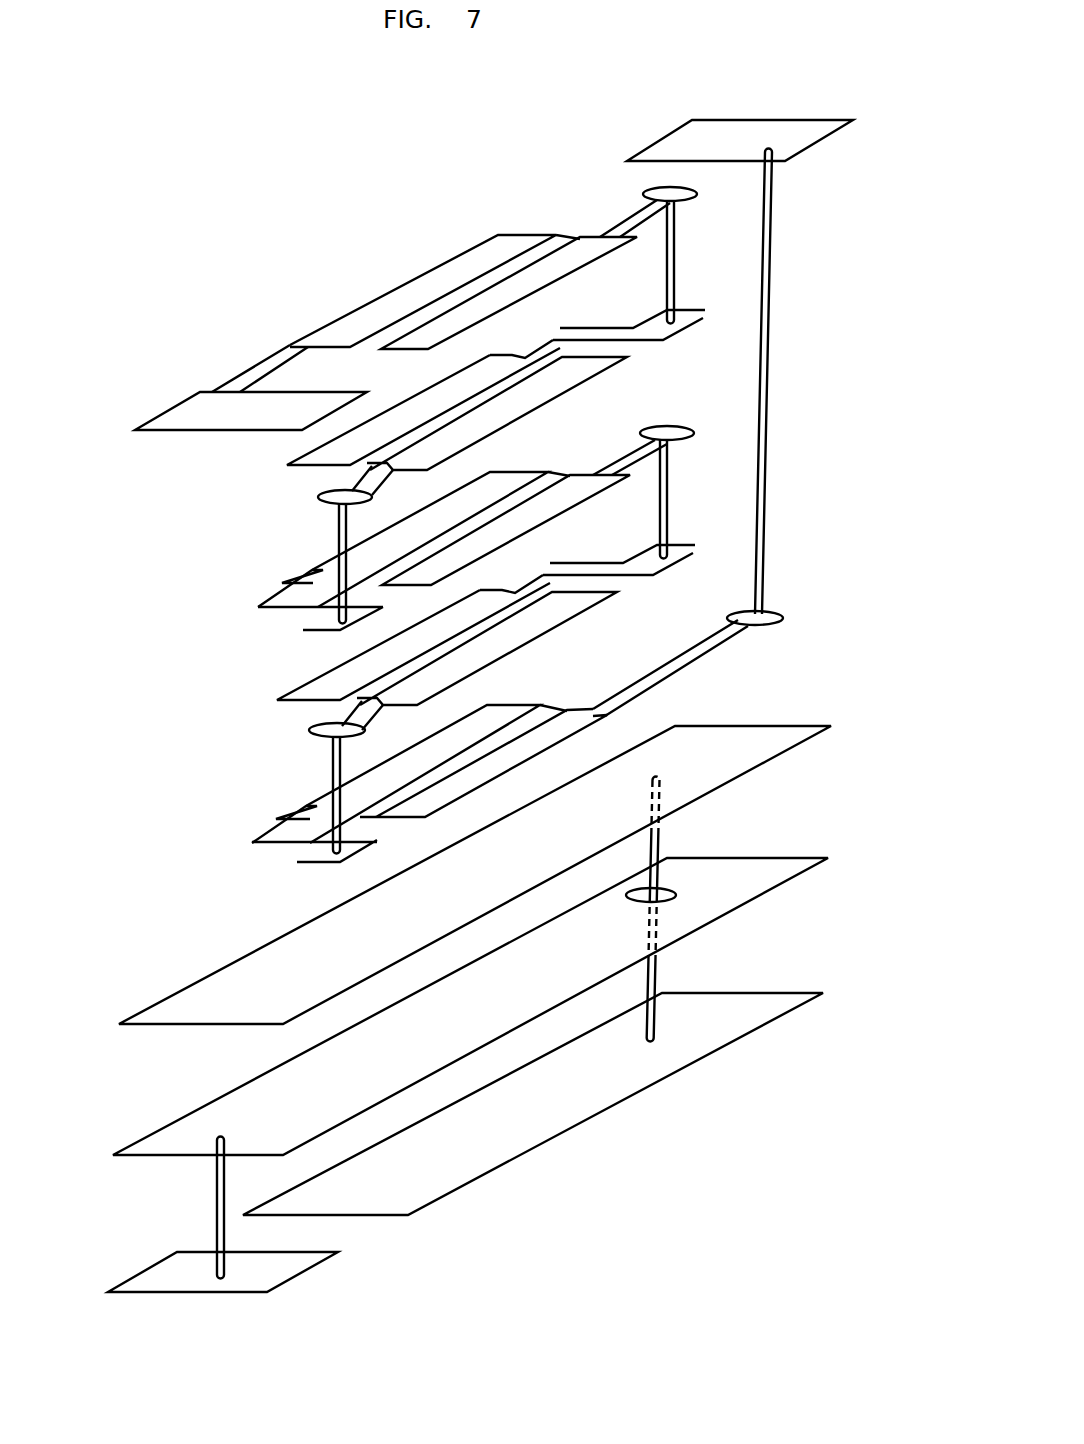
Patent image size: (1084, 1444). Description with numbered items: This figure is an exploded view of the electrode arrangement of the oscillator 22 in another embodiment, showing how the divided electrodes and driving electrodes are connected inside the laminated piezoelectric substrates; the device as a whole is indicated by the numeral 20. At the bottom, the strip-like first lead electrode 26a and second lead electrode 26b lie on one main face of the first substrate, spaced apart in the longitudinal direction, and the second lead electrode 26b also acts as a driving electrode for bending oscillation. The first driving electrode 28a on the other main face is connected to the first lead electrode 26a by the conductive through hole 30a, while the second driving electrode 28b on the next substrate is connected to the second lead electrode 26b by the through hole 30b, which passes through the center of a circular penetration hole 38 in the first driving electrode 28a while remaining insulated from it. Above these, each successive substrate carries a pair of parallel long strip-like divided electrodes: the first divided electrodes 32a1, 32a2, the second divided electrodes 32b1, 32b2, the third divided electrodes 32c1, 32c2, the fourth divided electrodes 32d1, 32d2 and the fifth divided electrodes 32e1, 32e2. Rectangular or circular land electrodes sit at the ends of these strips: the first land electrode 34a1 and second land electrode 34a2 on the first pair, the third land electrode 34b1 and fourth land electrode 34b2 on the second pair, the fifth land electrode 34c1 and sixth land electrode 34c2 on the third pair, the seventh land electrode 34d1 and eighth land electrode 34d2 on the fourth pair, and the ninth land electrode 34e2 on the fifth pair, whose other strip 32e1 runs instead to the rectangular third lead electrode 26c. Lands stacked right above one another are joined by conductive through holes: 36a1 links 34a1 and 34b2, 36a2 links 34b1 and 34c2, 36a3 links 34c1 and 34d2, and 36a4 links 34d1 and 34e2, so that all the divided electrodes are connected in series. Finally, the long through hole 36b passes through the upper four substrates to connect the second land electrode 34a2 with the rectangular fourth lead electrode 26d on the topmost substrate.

The multilayer coil device 20 is at (252, 81).
The oscillator 22 is at (541, 177).
The first lead electrode 26a is at (295, 1268).
The second lead electrode 26b is at (638, 1085).
The third lead electrode 26c is at (185, 398).
The fourth lead electrode 26d is at (675, 155).
The first driving electrode 28a is at (775, 866).
The second driving electrode 28b is at (780, 725).
The conductive through hole 30a is at (217, 1205).
The conductive through hole 30b is at (665, 836).
The first divided electrode 32a1 is at (305, 800).
The first divided electrode 32a2 is at (608, 716).
The second divided electrode 32b1 is at (318, 683).
The second divided electrode 32b2 is at (573, 612).
The third divided electrode 32c1 is at (312, 570).
The third divided electrode 32c2 is at (573, 497).
The fourth divided electrode 32d1 is at (313, 455).
The fourth divided electrode 32d2 is at (570, 393).
The fifth divided electrode 32e1 is at (425, 282).
The fifth divided electrode 32e2 is at (582, 262).
The first land electrode 34a1 is at (320, 858).
The second land electrode 34a2 is at (782, 618).
The third land electrode 34b1 is at (690, 560).
The fourth land electrode 34b2 is at (320, 725).
The fifth land electrode 34c1 is at (322, 630).
The sixth land electrode 34c2 is at (690, 425).
The seventh land electrode 34d1 is at (705, 312).
The eighth land electrode 34d2 is at (330, 493).
The ninth land electrode 34e2 is at (700, 190).
The conductive through hole 36a1 is at (330, 765).
The conductive through hole 36a2 is at (707, 478).
The conductive through hole 36a3 is at (330, 530).
The conductive through hole 36a4 is at (680, 218).
The conductive through hole 36b is at (768, 463).
The penetration hole 38 is at (685, 888).